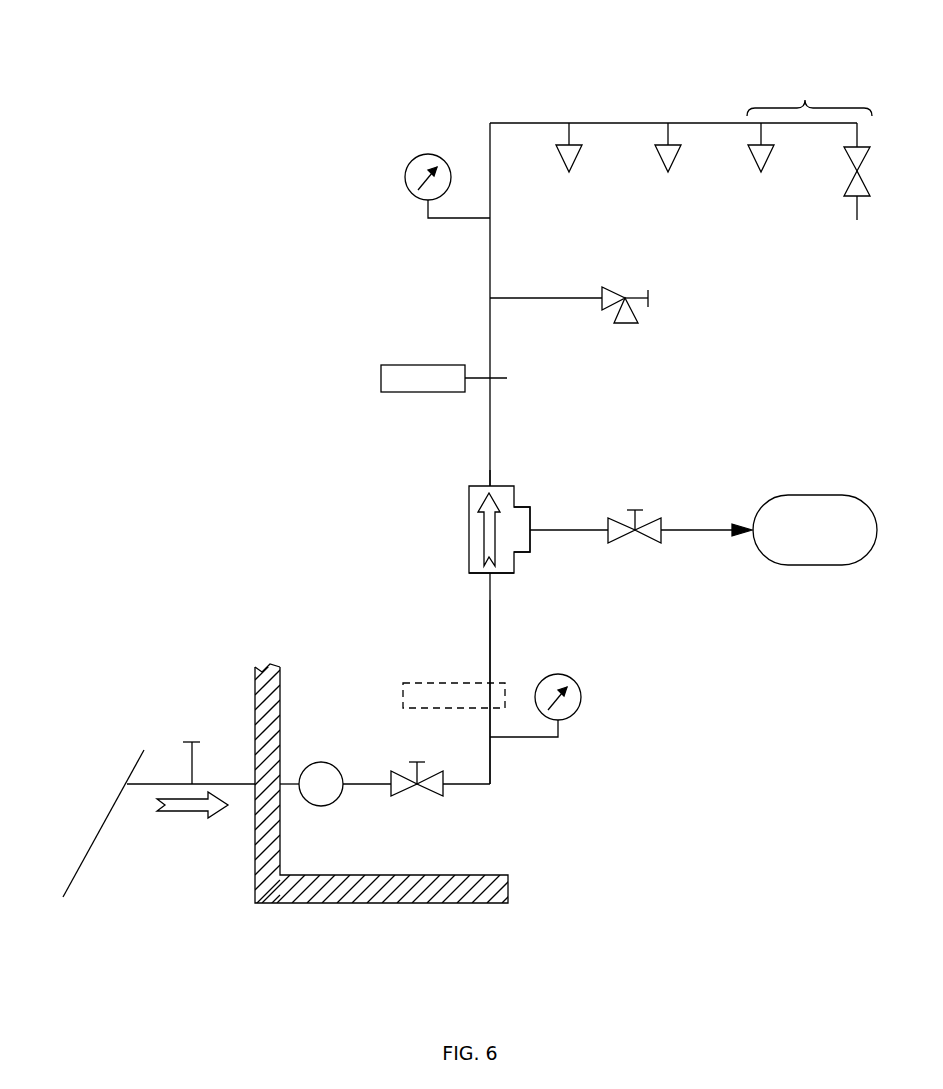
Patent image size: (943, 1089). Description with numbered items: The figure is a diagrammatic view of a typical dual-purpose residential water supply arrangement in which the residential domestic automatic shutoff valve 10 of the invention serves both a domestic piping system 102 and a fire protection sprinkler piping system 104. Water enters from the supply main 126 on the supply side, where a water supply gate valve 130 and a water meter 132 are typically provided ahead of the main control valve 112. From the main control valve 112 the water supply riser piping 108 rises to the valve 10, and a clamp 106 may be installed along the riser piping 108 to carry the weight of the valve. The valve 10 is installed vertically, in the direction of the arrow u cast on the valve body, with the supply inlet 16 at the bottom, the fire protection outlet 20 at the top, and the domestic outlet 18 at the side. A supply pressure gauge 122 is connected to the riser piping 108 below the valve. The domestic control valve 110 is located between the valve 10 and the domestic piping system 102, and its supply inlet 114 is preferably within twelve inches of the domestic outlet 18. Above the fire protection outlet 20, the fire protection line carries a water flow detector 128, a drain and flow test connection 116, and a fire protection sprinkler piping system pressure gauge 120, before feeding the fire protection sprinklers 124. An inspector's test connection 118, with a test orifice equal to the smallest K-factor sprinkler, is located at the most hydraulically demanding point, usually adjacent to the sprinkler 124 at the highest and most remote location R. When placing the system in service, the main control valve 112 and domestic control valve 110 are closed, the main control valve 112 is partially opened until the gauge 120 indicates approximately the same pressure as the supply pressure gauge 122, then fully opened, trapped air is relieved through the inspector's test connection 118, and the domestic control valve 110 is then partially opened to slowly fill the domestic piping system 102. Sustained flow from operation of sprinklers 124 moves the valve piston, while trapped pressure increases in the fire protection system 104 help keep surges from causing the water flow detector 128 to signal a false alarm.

The fire protection sprinkler piping system 104 is at (431, 77).
The fire protection sprinkler 124 is at (578, 166).
The inspector's test connection 118 is at (842, 196).
The highest and most remote sprinkler location R is at (805, 98).
The fire protection sprinkler piping system pressure gauge 120 is at (405, 170).
The drain and flow test connection 116 is at (636, 323).
The water flow detector 128 is at (381, 378).
The residential domestic automatic shutoff valve 10 is at (469, 510).
The arrow u is at (487, 528).
The fire protection outlet 20 is at (500, 486).
The domestic outlet 18 is at (531, 514).
The supply inlet 16 is at (494, 573).
The supply inlet to the domestic control valve 114 is at (610, 543).
The domestic control valve 110 is at (661, 543).
The domestic piping system 102 is at (820, 565).
The water supply riser piping 108 is at (492, 643).
The clamp 106 is at (425, 683).
The supply pressure gauge 122 is at (582, 697).
The water supply gate valve 130 is at (192, 740).
The water main 126 is at (86, 860).
The water meter 132 is at (321, 762).
The main control valve 112 is at (445, 796).